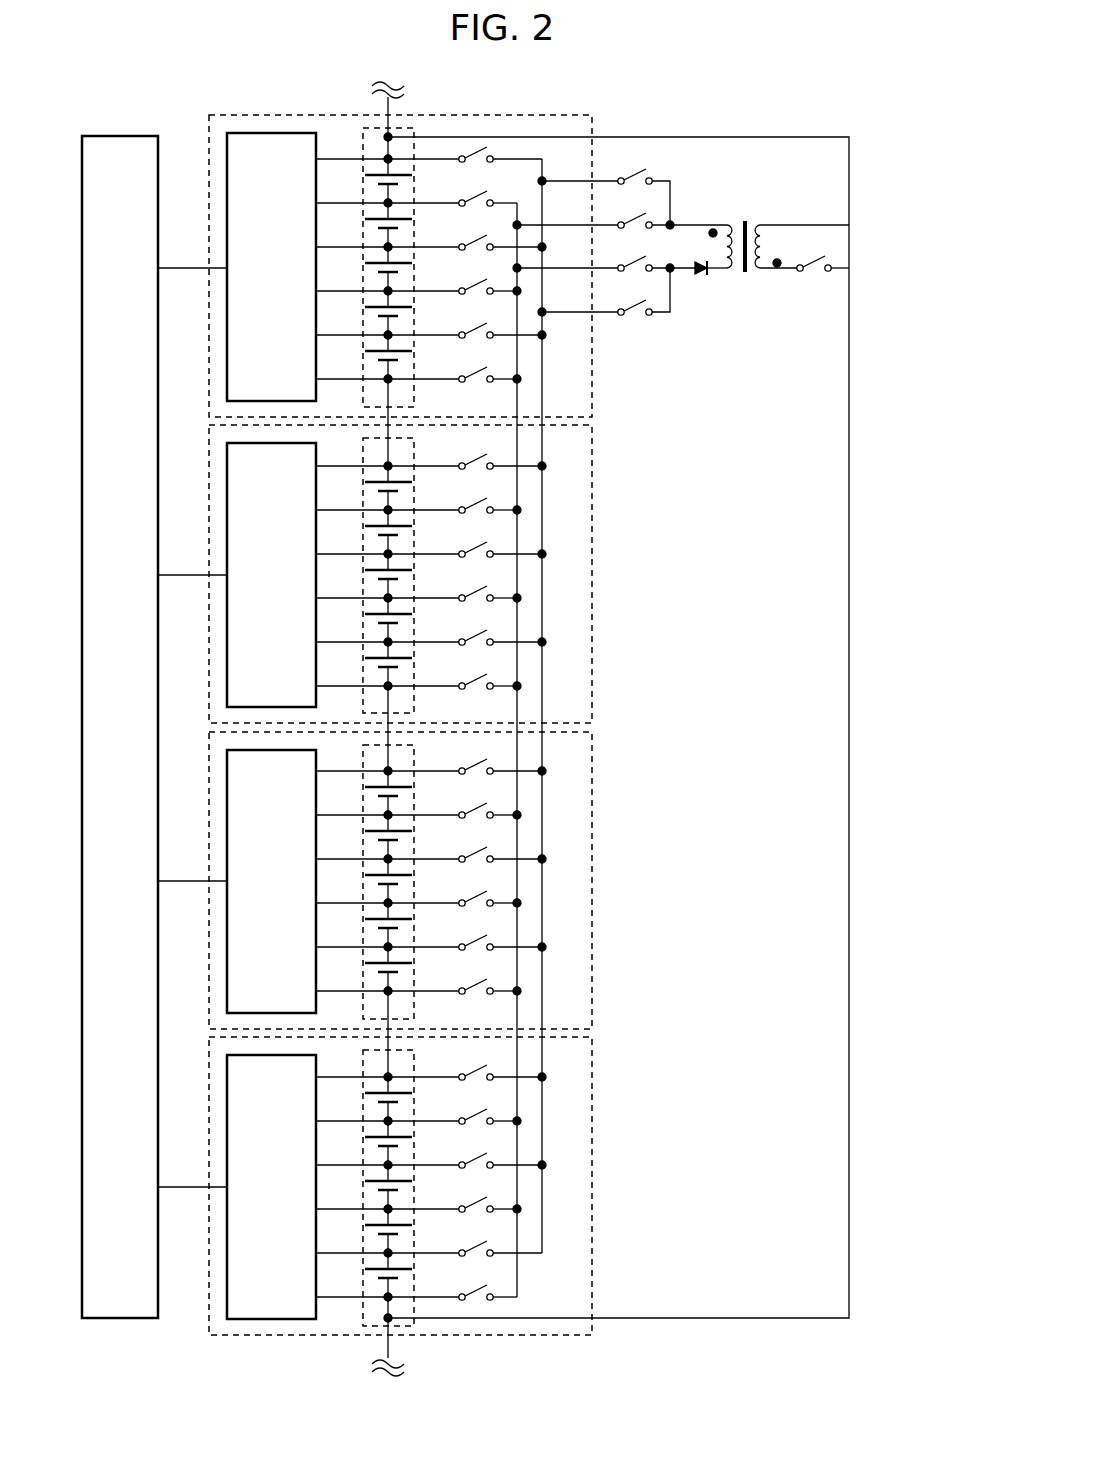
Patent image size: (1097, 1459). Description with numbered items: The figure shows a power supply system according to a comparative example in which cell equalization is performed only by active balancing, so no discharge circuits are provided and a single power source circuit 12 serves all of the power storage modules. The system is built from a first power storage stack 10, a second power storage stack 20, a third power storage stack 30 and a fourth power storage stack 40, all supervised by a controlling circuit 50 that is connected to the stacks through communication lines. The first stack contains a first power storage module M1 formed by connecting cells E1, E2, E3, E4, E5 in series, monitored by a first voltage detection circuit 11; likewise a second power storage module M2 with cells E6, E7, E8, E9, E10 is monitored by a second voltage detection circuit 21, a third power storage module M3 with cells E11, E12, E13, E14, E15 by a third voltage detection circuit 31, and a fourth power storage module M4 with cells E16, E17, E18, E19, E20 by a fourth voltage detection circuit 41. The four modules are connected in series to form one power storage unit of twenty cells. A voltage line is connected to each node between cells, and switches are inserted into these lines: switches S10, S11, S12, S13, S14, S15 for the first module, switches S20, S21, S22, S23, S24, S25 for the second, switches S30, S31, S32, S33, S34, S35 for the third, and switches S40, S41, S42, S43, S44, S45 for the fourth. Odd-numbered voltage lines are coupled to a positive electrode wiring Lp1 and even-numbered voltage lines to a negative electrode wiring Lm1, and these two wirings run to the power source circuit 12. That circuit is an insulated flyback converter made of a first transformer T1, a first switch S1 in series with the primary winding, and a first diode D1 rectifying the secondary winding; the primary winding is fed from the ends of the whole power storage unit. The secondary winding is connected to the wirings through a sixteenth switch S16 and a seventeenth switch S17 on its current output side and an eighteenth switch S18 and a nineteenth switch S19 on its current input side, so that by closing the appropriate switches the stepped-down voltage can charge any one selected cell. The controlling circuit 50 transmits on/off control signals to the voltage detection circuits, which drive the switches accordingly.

The controlling circuit 50 is at (82, 172).
The first power storage stack 10 is at (592, 126).
The second power storage stack 20 is at (592, 461).
The third power storage stack 30 is at (592, 768).
The fourth power storage stack 40 is at (592, 1073).
The first voltage detection circuit 11 is at (316, 148).
The second voltage detection circuit 21 is at (316, 458).
The third voltage detection circuit 31 is at (316, 765).
The fourth voltage detection circuit 41 is at (316, 1070).
The power source circuit 12 is at (779, 228).
The first power storage module M1 is at (363, 390).
The second power storage module M2 is at (363, 696).
The third power storage module M3 is at (363, 1002).
The fourth power storage module M4 is at (363, 1308).
The cell E1 is at (374, 181).
The cell E2 is at (374, 225).
The cell E3 is at (374, 269).
The cell E4 is at (374, 313).
The cell E5 is at (374, 357).
The cell E6 is at (374, 488).
The cell E7 is at (374, 532).
The cell E8 is at (374, 576).
The cell E9 is at (374, 620).
The cell E10 is at (369, 664).
The cell E11 is at (369, 793).
The cell E12 is at (369, 837).
The cell E13 is at (369, 881).
The cell E14 is at (369, 925).
The cell E15 is at (369, 969).
The cell E16 is at (369, 1099).
The cell E17 is at (369, 1143).
The cell E18 is at (369, 1187).
The cell E19 is at (369, 1231).
The cell E20 is at (369, 1275).
The tenth switch S10 is at (429, 166).
The eleventh switch S11 is at (416, 210).
The twelfth switch S12 is at (431, 254).
The thirteenth switch S13 is at (418, 298).
The fourteenth switch S14 is at (431, 342).
The fifteenth switch S15 is at (418, 386).
The sixteenth switch S16 is at (604, 197).
The seventeenth switch S17 is at (620, 232).
The eighteenth switch S18 is at (604, 275).
The nineteenth switch S19 is at (604, 303).
The twentieth switch S20 is at (431, 473).
The twenty-first switch S21 is at (418, 517).
The twenty-second switch S22 is at (431, 561).
The twenty-third switch S23 is at (418, 605).
The twenty-fourth switch S24 is at (431, 649).
The twenty-fifth switch S25 is at (418, 693).
The thirtieth switch S30 is at (431, 778).
The thirty-first switch S31 is at (418, 822).
The thirty-second switch S32 is at (431, 866).
The thirty-third switch S33 is at (418, 910).
The thirty-fourth switch S34 is at (431, 954).
The thirty-fifth switch S35 is at (418, 998).
The fortieth switch S40 is at (431, 1084).
The forty-first switch S41 is at (418, 1128).
The forty-second switch S42 is at (431, 1172).
The forty-third switch S43 is at (418, 1216).
The forty-fourth switch S44 is at (429, 1260).
The forty-fifth switch S45 is at (416, 1304).
The first switch S1 is at (823, 276).
The first diode D1 is at (706, 279).
The first transformer T1 is at (779, 256).
The positive electrode wiring Lp1 is at (545, 163).
The negative electrode wiring Lm1 is at (513, 200).